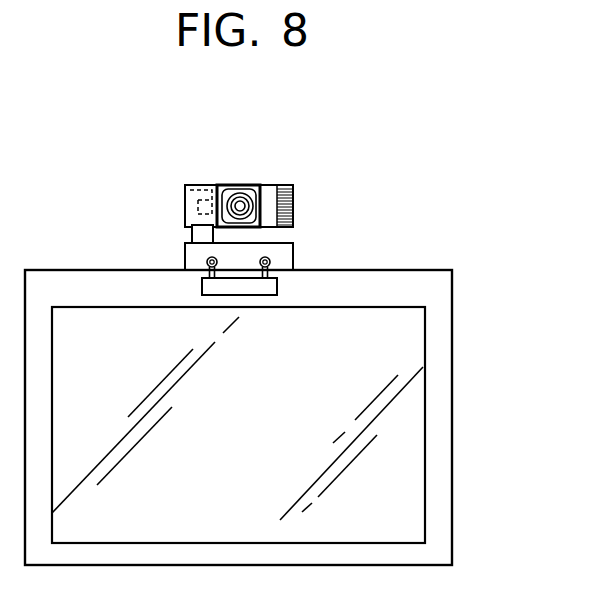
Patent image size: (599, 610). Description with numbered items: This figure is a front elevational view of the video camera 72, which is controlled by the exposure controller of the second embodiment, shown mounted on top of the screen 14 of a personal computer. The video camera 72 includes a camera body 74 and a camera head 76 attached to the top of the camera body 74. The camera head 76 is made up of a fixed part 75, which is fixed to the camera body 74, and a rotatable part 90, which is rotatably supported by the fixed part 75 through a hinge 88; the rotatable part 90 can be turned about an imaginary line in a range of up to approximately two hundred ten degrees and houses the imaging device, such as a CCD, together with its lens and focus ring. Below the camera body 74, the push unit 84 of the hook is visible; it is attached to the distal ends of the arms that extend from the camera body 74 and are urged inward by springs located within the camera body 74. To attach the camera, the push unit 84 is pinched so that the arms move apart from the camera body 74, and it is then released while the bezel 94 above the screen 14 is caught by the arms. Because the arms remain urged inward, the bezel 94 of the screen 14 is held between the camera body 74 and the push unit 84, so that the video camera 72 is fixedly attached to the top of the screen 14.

The screen 14 is at (405, 420).
The video camera 72 is at (269, 187).
The camera body 74 is at (293, 255).
The fixed part 75 is at (208, 186).
The camera head 76 is at (245, 174).
The push unit 84 is at (202, 290).
The hinge 88 is at (185, 192).
The rotatable part 90 is at (285, 185).
The bezel 94 is at (404, 270).